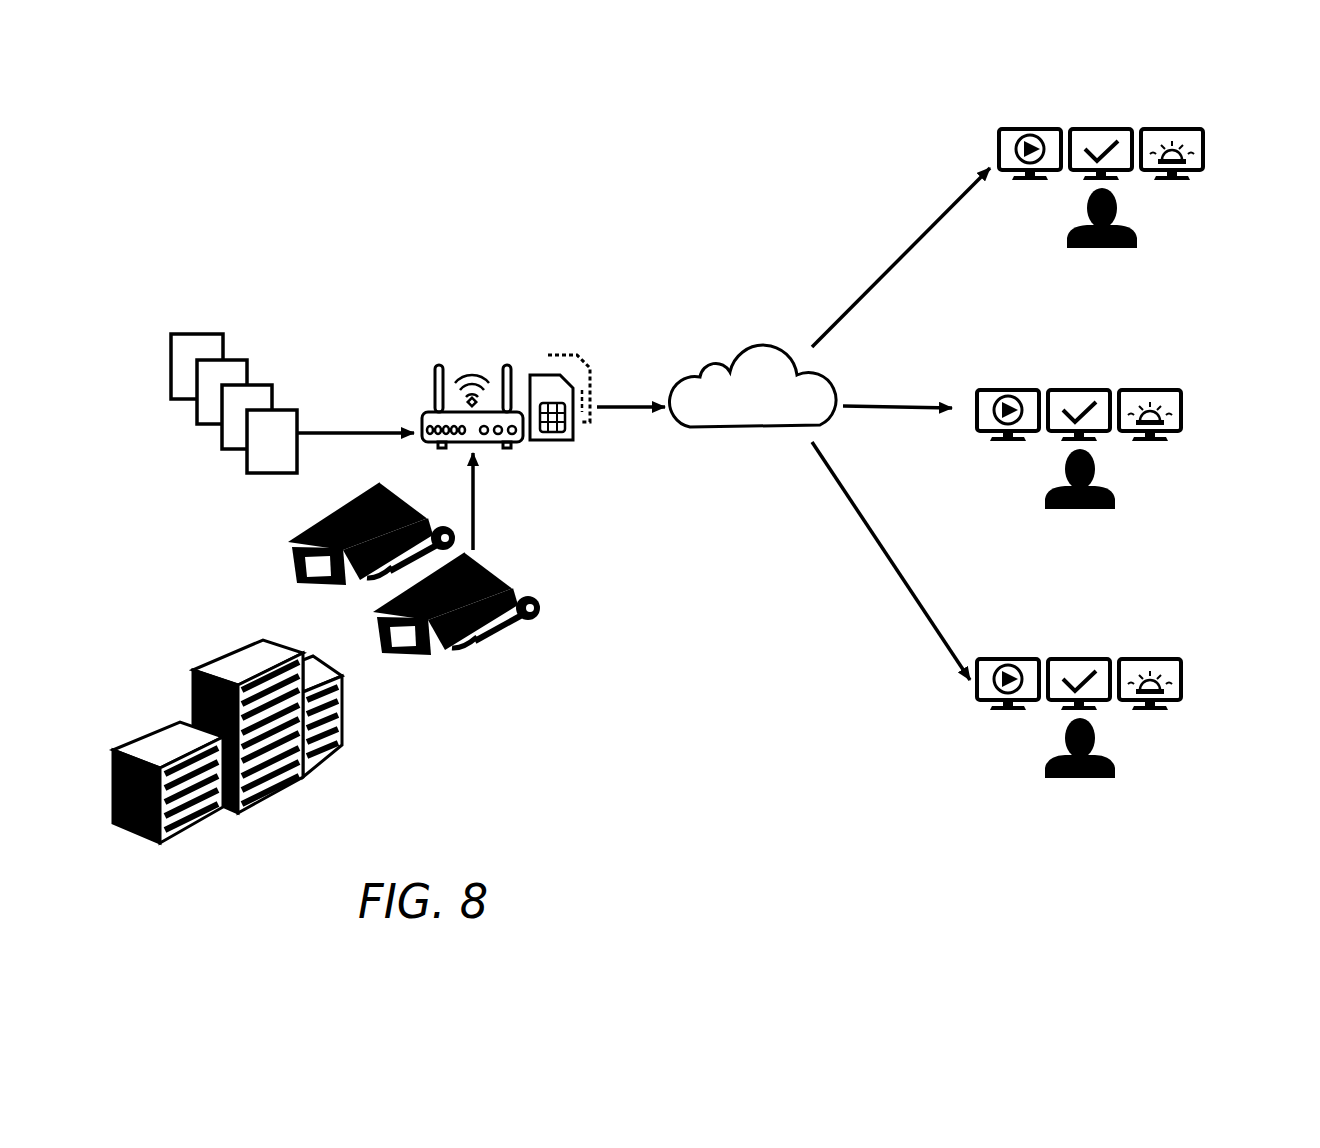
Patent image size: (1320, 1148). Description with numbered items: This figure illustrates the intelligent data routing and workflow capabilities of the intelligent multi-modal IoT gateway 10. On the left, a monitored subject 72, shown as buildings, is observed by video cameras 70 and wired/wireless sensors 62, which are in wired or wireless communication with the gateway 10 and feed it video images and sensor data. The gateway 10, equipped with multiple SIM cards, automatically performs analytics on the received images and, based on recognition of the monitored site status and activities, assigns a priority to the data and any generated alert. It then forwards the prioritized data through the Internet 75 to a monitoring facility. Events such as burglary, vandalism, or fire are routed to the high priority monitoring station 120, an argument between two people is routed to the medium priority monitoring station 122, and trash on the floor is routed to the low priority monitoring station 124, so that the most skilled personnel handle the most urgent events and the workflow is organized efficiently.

The intelligent multi-modal IoT gateway 10 is at (420, 408).
The wired/wireless sensors 62 is at (248, 377).
The video cameras 70 is at (493, 558).
The subject 72 is at (193, 685).
The Internet 75 is at (773, 407).
The high priority monitoring station 120 is at (1210, 148).
The medium priority monitoring station 122 is at (1187, 415).
The low priority monitoring station 124 is at (1183, 685).